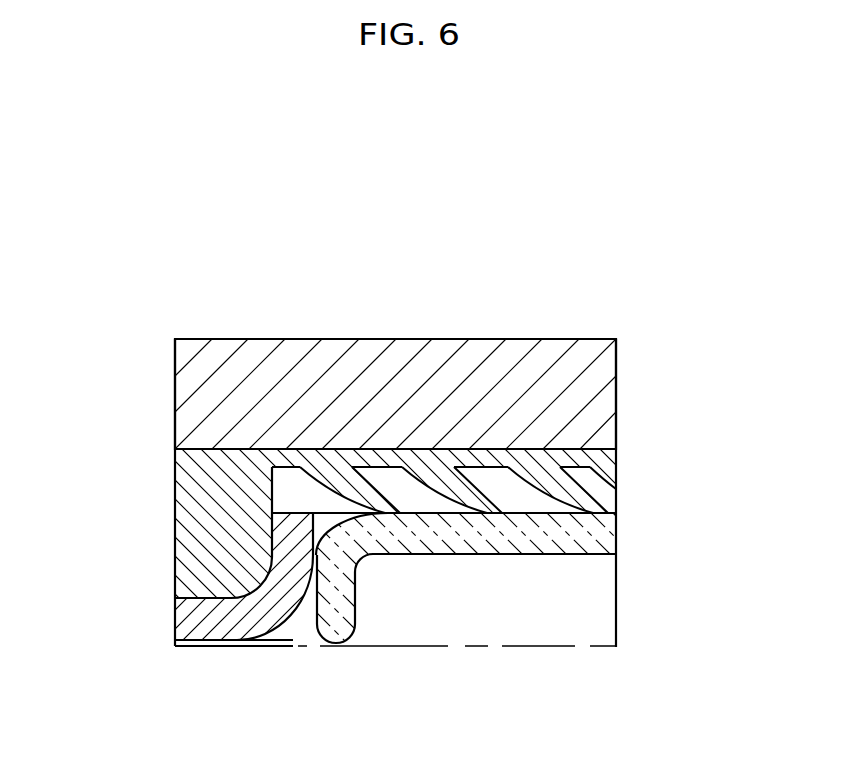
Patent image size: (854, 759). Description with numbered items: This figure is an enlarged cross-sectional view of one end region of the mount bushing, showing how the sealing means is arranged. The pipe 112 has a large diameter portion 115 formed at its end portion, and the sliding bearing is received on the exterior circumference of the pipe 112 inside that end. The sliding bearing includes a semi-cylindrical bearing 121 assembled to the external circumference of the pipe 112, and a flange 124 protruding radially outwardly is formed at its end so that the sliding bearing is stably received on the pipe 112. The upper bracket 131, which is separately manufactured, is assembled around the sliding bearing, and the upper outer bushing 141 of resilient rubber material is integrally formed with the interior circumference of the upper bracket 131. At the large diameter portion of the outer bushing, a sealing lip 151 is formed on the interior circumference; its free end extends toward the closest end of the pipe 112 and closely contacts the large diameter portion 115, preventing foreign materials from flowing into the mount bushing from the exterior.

The upper bracket 131 is at (387, 397).
The flange 124 is at (293, 530).
The upper outer bushing 141 is at (202, 560).
The bearing 121 is at (203, 622).
The pipe 112 is at (341, 608).
The large diameter portion 115 is at (583, 535).
The lip 151 is at (553, 487).